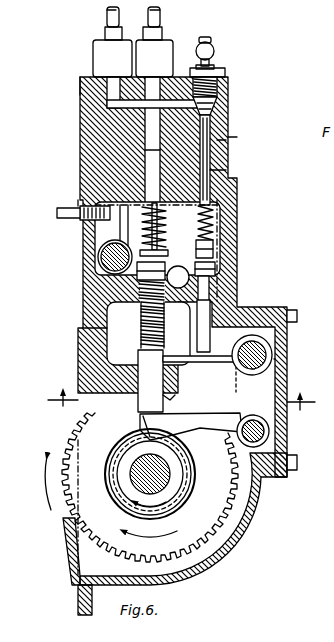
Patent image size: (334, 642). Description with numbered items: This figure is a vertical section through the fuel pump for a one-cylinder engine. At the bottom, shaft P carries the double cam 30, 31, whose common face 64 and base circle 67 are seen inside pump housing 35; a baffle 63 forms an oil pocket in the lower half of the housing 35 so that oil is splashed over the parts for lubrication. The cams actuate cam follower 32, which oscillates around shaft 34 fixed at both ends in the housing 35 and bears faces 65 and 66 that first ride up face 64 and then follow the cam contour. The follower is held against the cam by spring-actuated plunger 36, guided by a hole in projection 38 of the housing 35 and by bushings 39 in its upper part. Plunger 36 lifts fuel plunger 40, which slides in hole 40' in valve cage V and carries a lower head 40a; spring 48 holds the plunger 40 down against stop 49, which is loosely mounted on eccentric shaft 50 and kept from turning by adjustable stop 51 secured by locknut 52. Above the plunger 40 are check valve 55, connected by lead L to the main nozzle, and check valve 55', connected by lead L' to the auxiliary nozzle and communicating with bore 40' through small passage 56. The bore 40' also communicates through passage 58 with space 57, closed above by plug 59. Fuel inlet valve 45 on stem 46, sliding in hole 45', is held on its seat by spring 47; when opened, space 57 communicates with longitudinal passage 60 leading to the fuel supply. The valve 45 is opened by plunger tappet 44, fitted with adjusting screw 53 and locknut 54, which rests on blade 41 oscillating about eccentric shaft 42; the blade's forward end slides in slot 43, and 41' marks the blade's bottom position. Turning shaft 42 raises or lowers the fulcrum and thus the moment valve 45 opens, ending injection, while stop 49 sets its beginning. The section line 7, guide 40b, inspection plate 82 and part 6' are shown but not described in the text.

The check valve 55 is at (150, 42).
The check valve 55' is at (112, 42).
The passage 58 is at (178, 77).
The plug 59 is at (212, 66).
The fuel inlet valve 45 is at (229, 79).
The space 57 is at (215, 108).
The stem 46 is at (212, 132).
The longitudinal passage 60 is at (237, 137).
The hole 45' is at (240, 145).
The hole 40' is at (237, 175).
The small passage 56 is at (110, 117).
The fuel plunger 40 is at (103, 155).
The locknut 52 is at (79, 211).
The adjustable stop 51 is at (57, 220).
The chamber wall 6' is at (235, 251).
The spring 48 is at (165, 226).
The valve guide 40b is at (150, 237).
The lower head 40a is at (161, 248).
The spring 47 is at (214, 242).
The stop 49 is at (98, 260).
The bushings 39 is at (166, 270).
The adjusting screw 53 is at (216, 268).
The eccentric shaft 50 is at (96, 277).
The locknut 54 is at (212, 283).
The slot 43 is at (140, 358).
The plunger tappet 44 is at (197, 345).
The projection 38 is at (105, 370).
The blade 41 is at (219, 369).
The bottom position of blade 41' is at (228, 382).
The eccentric shaft 42 is at (272, 360).
The plunger 36 is at (150, 381).
The faces 65 is at (165, 408).
The shaft 34 is at (253, 416).
The cam 31 is at (145, 430).
The cam follower 32 is at (191, 426).
The bolt 82 is at (289, 446).
The cam 30 is at (108, 447).
The faces 66 is at (150, 437).
The common face 64 is at (150, 474).
The base circle 67 is at (120, 498).
The pump housing 35 is at (252, 520).
The baffle 63 is at (70, 550).
The section line 7 is at (180, 402).
The shaft P is at (167, 479).
The lead L is at (169, 9).
The lead L' is at (92, 18).
The valve cage V is at (80, 92).